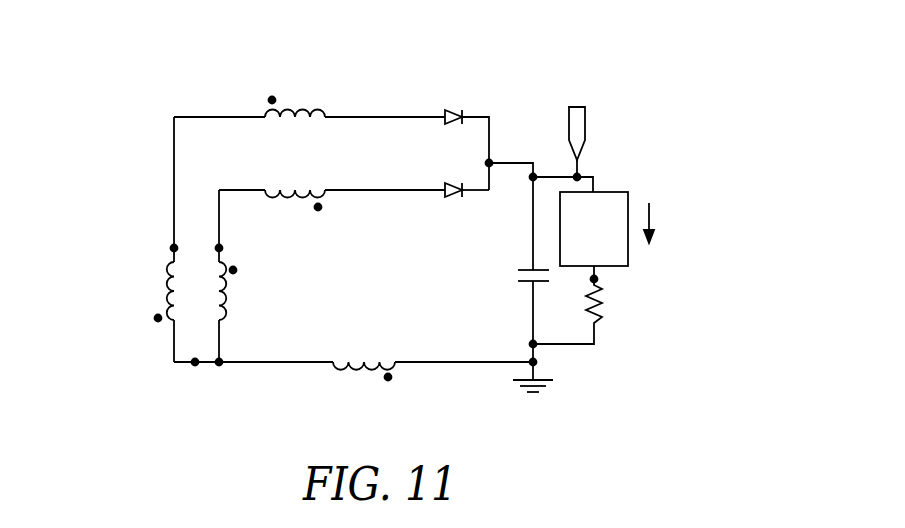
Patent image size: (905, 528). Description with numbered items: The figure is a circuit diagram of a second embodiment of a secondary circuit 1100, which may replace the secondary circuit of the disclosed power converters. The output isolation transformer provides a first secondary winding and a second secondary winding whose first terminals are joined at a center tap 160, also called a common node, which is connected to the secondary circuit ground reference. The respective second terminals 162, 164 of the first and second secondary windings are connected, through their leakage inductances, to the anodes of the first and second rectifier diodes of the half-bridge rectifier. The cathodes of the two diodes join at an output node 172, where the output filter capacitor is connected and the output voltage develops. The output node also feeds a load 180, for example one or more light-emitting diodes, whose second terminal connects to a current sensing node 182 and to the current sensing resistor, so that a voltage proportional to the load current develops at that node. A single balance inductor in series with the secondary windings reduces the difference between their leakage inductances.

The secondary circuit 1100 is at (649, 98).
The center tap 160 is at (195, 362).
The second terminal of the first secondary winding 162 is at (174, 248).
The second terminal of the second secondary winding 164 is at (219, 248).
The output node 172 is at (489, 163).
The load 180 is at (628, 196).
The current sensing node 182 is at (594, 279).